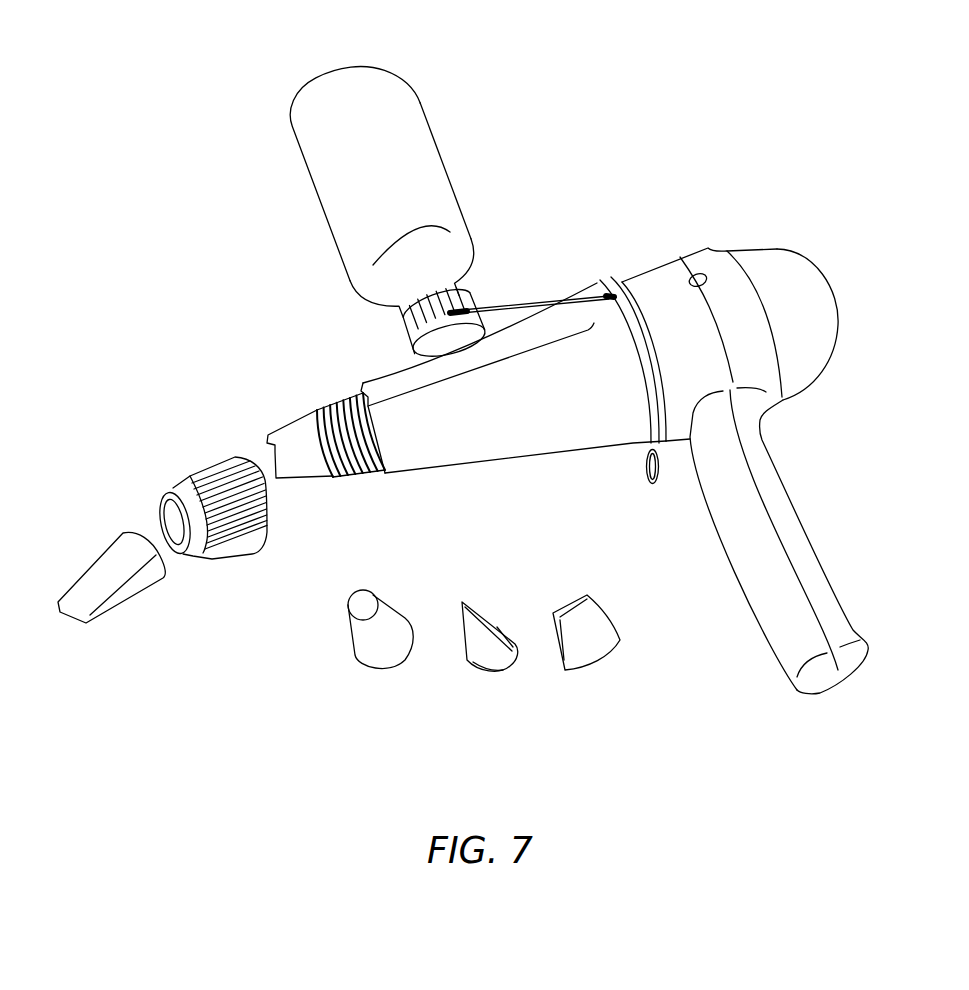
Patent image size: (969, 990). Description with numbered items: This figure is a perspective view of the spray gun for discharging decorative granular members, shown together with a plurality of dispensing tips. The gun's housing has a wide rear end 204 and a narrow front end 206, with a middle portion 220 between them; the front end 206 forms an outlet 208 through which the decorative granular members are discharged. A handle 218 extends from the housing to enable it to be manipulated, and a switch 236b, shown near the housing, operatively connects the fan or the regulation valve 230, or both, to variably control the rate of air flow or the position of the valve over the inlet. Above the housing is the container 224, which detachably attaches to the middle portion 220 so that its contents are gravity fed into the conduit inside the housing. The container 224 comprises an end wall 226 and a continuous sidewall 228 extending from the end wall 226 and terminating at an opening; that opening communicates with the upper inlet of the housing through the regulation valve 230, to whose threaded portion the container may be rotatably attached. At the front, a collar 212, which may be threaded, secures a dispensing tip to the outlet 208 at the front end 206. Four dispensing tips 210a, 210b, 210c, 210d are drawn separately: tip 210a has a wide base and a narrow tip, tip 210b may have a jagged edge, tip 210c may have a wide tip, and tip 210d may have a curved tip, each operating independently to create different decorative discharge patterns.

The rear end 204 is at (778, 248).
The front end 206 is at (390, 474).
The outlet 208 is at (268, 437).
The dispensing tip 210a is at (122, 533).
The dispensing tip 210b is at (387, 669).
The dispensing tip 210c is at (495, 673).
The dispensing tip 210d is at (605, 662).
The collar 212 is at (197, 467).
The handle 218 is at (737, 590).
The middle portion 220 is at (507, 457).
The container 224 is at (305, 221).
The end wall 226 is at (327, 73).
The continuous sidewall 228 is at (444, 160).
The regulation valve 230 is at (478, 290).
The switch 236b is at (650, 487).